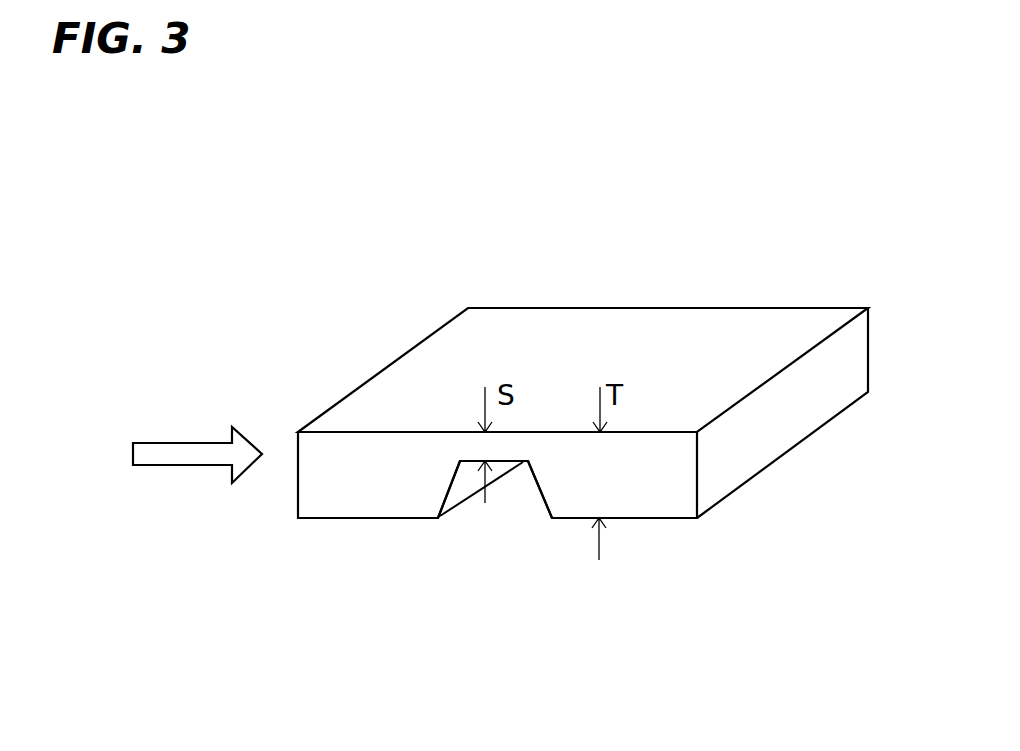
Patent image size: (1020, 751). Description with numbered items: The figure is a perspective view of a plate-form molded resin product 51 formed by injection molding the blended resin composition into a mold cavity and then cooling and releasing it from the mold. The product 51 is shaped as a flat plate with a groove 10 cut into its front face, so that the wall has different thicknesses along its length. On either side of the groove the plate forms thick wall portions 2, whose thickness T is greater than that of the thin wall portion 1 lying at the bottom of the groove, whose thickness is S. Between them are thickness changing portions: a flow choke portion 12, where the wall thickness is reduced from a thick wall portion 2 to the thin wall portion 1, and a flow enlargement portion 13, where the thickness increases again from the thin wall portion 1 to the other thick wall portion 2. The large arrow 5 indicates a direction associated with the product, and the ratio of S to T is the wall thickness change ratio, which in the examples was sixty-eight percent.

The thin wall portion 1 is at (492, 450).
The thick wall portion 2 is at (360, 475).
The moving direction 5 is at (192, 452).
The groove 10 is at (541, 497).
The flow choke portion 12 is at (427, 475).
The flow enlargement portion 13 is at (538, 482).
The molded resin product 51 is at (687, 292).